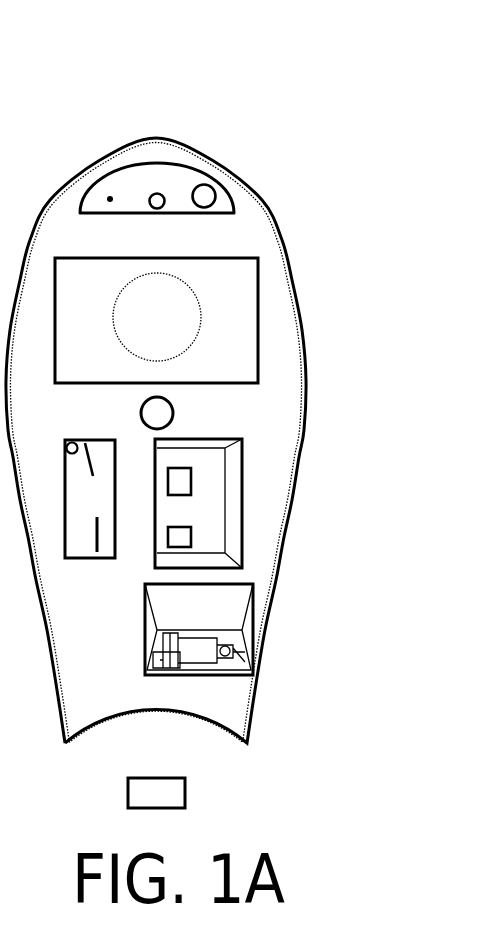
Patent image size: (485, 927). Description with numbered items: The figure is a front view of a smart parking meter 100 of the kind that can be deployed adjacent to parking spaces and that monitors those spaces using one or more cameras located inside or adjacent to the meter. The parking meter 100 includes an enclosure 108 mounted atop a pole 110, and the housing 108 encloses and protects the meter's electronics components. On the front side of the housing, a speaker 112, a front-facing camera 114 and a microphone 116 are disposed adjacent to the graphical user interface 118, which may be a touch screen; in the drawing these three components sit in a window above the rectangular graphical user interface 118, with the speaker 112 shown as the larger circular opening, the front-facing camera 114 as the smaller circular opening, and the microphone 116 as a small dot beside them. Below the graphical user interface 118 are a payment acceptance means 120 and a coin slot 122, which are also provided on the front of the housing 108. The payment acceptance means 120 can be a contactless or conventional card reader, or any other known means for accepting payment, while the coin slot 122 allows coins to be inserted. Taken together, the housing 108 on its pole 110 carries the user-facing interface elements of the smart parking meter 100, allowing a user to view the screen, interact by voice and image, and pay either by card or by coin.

The smart parking meter 100 is at (166, 110).
The enclosure 108 is at (208, 706).
The pole 110 is at (172, 795).
The speaker 112 is at (214, 197).
The front-facing camera 114 is at (164, 203).
The microphone 116 is at (110, 199).
The graphical user interface 118 is at (233, 342).
The payment acceptance means 120 is at (200, 503).
The coin slot 122 is at (88, 467).